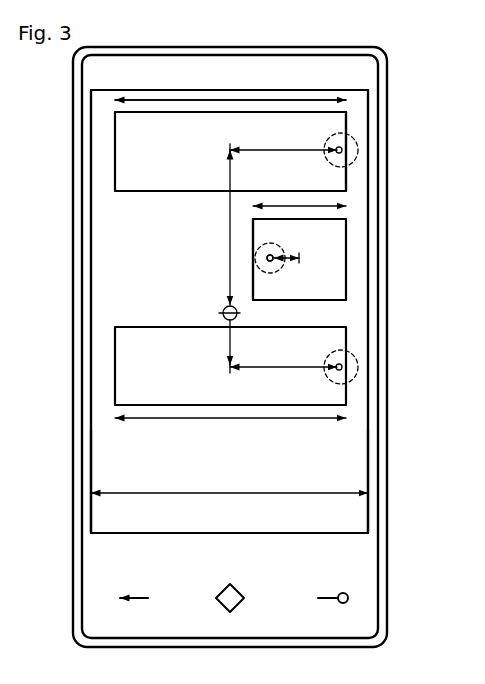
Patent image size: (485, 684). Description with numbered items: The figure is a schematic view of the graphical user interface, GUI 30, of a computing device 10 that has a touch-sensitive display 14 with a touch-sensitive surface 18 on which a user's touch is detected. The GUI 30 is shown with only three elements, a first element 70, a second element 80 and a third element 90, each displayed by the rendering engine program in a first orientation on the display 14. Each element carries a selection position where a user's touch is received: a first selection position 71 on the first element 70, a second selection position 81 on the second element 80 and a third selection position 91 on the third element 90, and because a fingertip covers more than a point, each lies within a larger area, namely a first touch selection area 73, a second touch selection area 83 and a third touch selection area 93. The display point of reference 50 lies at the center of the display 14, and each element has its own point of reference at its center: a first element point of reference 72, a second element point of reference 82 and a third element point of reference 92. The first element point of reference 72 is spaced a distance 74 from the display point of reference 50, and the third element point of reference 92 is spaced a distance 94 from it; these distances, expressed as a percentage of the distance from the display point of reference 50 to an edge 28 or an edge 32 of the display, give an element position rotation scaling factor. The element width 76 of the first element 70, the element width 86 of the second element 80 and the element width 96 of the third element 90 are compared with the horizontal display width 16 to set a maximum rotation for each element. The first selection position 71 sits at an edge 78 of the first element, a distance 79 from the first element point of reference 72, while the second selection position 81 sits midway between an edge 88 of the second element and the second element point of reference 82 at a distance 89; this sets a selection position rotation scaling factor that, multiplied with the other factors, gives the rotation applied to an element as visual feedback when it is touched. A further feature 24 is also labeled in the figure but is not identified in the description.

The computing device 10 is at (73, 582).
The touch-sensitive display 14 is at (265, 545).
The horizontal display width 16 is at (240, 495).
The touch-sensitive surface 18 is at (352, 452).
The housing bezel 24 is at (374, 468).
The edge of the display 28 is at (155, 97).
The GUI 30 is at (116, 237).
The edge of the display 32 is at (210, 533).
The display point of reference 50 is at (222, 311).
The first element 70 is at (112, 150).
The first selection position 71 is at (336, 158).
The first element point of reference 72 is at (229, 149).
The first touch selection area 73 is at (327, 139).
The distance 74 is at (228, 217).
The element width 76 is at (253, 99).
The edge of the first element 78 is at (347, 125).
The distance 79 is at (280, 148).
The second element 80 is at (350, 258).
The second selection position 81 is at (266, 260).
The second element point of reference 82 is at (299, 264).
The second touch selection area 83 is at (263, 248).
The element width 86 is at (312, 208).
The edge of the second element 88 is at (253, 232).
The distance 89 is at (287, 262).
The third element 90 is at (112, 378).
The third selection position 91 is at (336, 376).
The third element point of reference 92 is at (229, 368).
The third touch selection area 93 is at (327, 357).
The distance 94 is at (228, 358).
The element width 96 is at (228, 420).